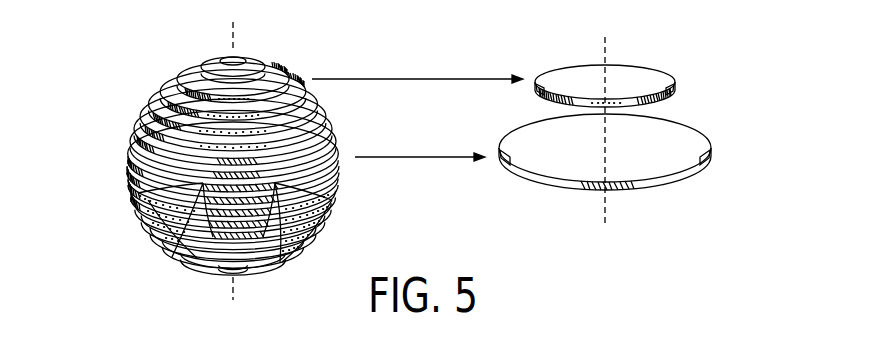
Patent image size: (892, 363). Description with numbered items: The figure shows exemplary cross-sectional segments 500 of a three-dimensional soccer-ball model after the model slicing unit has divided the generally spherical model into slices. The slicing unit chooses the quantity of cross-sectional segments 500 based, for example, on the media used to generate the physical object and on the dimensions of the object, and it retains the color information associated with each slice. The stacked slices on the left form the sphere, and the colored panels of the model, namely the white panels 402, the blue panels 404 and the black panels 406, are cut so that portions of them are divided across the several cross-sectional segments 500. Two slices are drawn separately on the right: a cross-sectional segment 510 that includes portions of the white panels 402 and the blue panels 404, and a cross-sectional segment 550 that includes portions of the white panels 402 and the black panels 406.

The cross-sectional segments 500 is at (147, 75).
The cross-sectional segment 510 is at (180, 63).
The cross-sectional segment 550 is at (132, 113).
The white panels 402 is at (180, 100).
The blue panels 404 is at (247, 110).
The black panels 406 is at (130, 157).